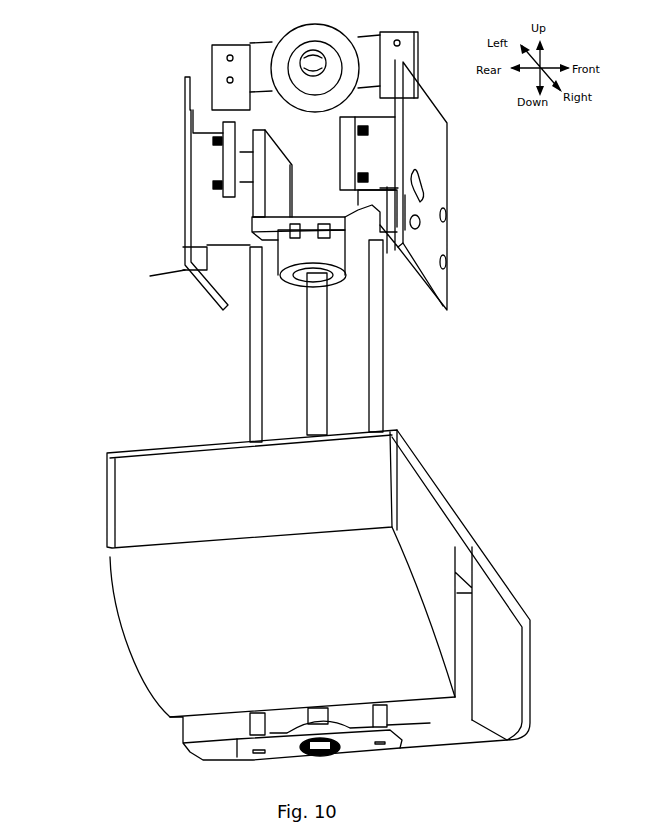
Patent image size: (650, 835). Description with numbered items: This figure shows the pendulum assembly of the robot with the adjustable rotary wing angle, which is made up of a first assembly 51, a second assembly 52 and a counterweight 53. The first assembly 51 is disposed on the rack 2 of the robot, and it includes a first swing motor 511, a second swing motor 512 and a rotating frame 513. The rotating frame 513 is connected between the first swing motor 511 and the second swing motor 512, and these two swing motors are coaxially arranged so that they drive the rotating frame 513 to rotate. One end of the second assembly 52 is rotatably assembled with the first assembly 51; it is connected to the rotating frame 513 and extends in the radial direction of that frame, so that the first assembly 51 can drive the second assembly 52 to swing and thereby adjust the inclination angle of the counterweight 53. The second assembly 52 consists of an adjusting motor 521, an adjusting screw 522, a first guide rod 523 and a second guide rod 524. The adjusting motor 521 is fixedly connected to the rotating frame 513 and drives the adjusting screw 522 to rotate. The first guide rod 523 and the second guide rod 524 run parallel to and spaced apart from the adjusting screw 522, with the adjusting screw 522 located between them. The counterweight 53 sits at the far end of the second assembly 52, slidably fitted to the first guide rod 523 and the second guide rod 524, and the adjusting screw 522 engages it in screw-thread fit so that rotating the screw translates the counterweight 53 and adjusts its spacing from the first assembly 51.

The rack 2 is at (435, 160).
The first assembly 51 is at (218, 167).
The first swing motor 511 is at (242, 217).
The second swing motor 512 is at (378, 210).
The rotating frame 513 is at (262, 181).
The second assembly 52 is at (209, 333).
The adjusting motor 521 is at (278, 263).
The adjusting screw 522 is at (317, 339).
The first guide rod 523 is at (260, 372).
The second guide rod 524 is at (377, 417).
The counterweight 53 is at (213, 593).